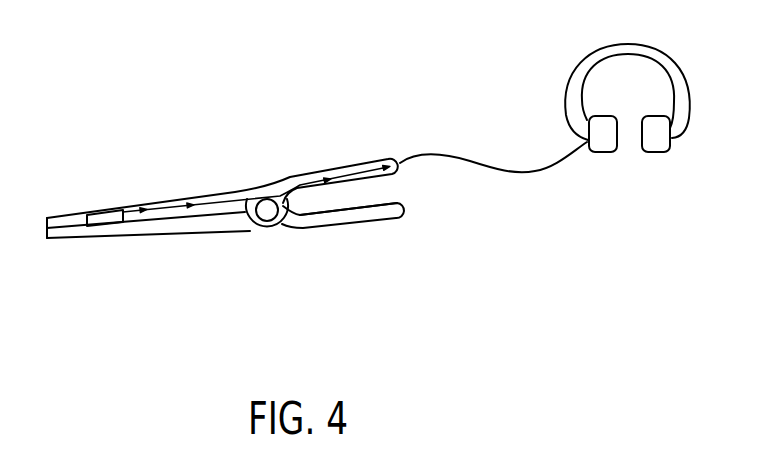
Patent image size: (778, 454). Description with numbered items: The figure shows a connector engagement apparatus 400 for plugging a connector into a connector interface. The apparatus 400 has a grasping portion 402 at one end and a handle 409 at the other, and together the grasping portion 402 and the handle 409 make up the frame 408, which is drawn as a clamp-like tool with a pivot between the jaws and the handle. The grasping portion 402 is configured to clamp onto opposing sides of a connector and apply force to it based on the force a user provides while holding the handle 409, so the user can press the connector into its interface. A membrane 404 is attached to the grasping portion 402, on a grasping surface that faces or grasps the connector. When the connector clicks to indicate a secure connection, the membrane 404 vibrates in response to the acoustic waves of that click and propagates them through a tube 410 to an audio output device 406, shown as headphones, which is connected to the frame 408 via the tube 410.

The connector engagement apparatus 400 is at (388, 91).
The grasping portion 402 is at (62, 237).
The membrane 404 is at (110, 214).
The audio output device 406 is at (688, 90).
The frame 408 is at (272, 243).
The handle 409 is at (367, 221).
The tube 410 is at (520, 182).